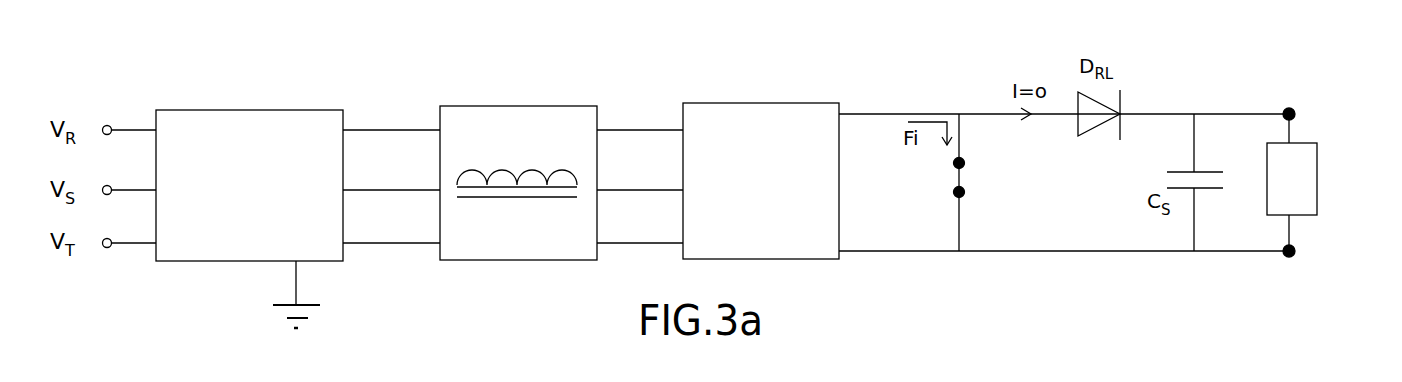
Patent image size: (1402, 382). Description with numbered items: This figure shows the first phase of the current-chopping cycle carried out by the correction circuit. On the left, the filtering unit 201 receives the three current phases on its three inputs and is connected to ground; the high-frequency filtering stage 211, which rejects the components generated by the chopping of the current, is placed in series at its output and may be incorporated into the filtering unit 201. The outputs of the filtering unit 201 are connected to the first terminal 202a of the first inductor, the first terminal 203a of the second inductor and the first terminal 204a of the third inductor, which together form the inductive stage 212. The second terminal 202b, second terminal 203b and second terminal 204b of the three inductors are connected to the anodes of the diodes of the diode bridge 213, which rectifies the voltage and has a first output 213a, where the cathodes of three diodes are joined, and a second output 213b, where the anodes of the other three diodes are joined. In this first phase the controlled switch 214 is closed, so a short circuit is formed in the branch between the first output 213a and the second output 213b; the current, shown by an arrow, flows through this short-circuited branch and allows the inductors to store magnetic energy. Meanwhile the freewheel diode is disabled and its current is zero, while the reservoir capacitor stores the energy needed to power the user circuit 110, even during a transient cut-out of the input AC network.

The filtering unit 201 is at (247, 179).
The filtering stage 211 is at (230, 110).
The first terminal of the first inductor 202a is at (440, 129).
The first terminal of the second inductor 203a is at (440, 189).
The first terminal of the third inductor 204a is at (440, 242).
The inductive stage 212 is at (522, 106).
The second terminal of the first inductor 202b is at (600, 129).
The second terminal of the second inductor 203b is at (600, 189).
The second terminal of the third inductor 204b is at (600, 242).
The diode bridge 213 is at (752, 103).
The first output of the diode bridge 213a is at (840, 113).
The second output of the diode bridge 213b is at (840, 250).
The controlled switch 214 is at (965, 182).
The user circuit 110 is at (1317, 188).